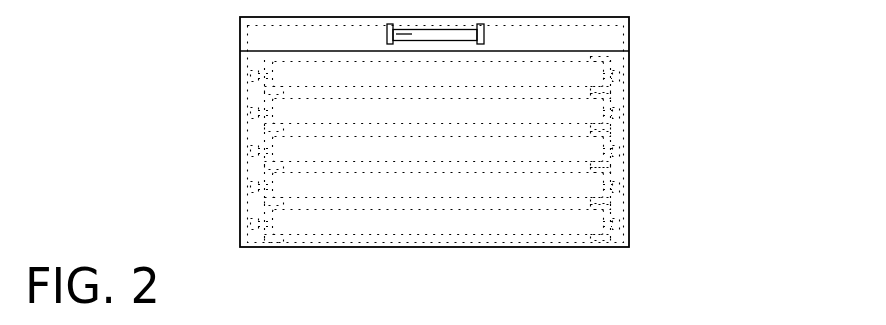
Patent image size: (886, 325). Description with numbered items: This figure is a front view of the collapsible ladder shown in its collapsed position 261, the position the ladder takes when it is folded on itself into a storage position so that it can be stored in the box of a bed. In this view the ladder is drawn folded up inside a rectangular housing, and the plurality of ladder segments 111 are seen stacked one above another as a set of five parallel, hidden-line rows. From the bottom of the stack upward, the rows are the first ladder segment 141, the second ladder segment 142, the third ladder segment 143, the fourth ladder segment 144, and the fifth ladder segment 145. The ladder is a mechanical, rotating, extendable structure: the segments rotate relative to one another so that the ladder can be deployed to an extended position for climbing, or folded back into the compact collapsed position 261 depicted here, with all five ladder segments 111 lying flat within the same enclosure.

The collapsed position 261 is at (222, 93).
The plurality of ladder segments 111 is at (705, 0).
The first ladder segment 141 is at (587, 225).
The second ladder segment 142 is at (585, 188).
The third ladder segment 143 is at (585, 148).
The fourth ladder segment 144 is at (585, 112).
The fifth ladder segment 145 is at (590, 78).